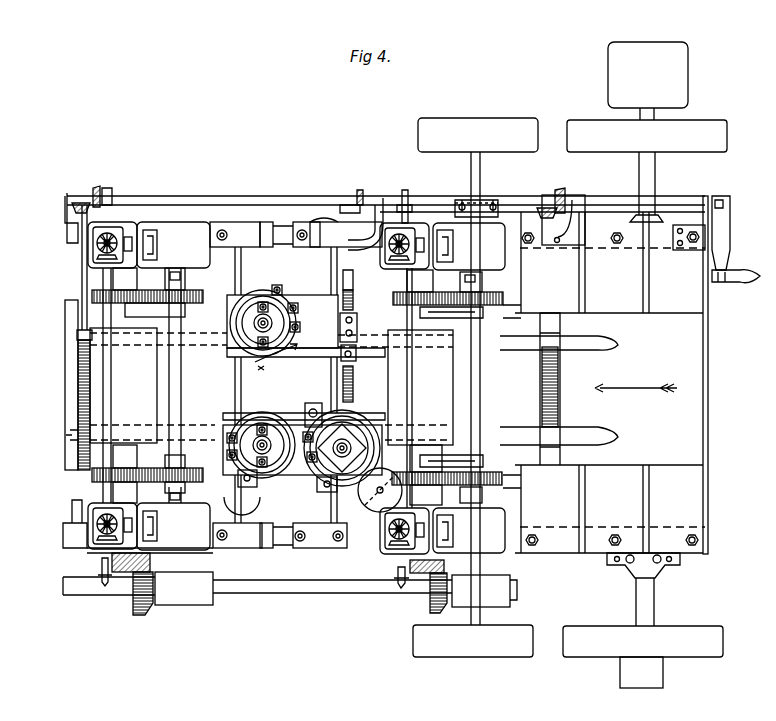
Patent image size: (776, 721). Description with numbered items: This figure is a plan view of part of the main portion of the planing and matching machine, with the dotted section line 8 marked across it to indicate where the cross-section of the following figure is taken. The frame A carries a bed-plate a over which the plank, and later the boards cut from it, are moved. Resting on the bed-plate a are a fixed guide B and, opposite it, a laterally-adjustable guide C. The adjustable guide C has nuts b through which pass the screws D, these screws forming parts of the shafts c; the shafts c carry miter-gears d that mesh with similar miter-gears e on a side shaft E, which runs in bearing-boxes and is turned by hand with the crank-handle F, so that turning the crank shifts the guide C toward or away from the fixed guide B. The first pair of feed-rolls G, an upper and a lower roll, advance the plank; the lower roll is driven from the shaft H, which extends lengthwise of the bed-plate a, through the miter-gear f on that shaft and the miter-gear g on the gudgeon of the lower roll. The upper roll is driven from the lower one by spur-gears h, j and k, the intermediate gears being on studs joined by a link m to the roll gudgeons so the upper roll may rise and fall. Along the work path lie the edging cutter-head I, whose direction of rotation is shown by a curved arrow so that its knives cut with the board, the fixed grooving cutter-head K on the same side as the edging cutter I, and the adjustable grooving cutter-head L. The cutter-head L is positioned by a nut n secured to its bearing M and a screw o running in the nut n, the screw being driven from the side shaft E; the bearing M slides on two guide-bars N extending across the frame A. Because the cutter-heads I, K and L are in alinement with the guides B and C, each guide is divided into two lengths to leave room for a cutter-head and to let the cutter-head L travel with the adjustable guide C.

The section line 8 8 is at (385, 640).
The frame A is at (185, 240).
The fixed guide B is at (610, 438).
The laterally-adjustable guide C is at (606, 345).
The screws D is at (64, 396).
The side shaft E is at (260, 208).
The crank-handle F is at (729, 258).
The first pair of feed-rolls G is at (420, 387).
The shaft H is at (292, 596).
The edging cutter-head I is at (350, 410).
The fixed grooving cutter-head K is at (238, 402).
The adjustable grooving cutter-head L is at (272, 362).
The bearing M is at (306, 326).
The guide-bars N is at (312, 292).
The bed-plate a is at (636, 368).
The nuts b is at (60, 342).
The shafts c is at (80, 272).
The miter-gears d is at (84, 200).
The miter-gears e is at (100, 188).
The miter-gear f is at (440, 640).
The miter-gear g is at (425, 588).
The spur-gear h is at (350, 202).
The spur-gear j is at (505, 310).
The spur-gear k is at (372, 498).
The link m is at (510, 314).
The nut n is at (357, 328).
The screw o is at (357, 296).